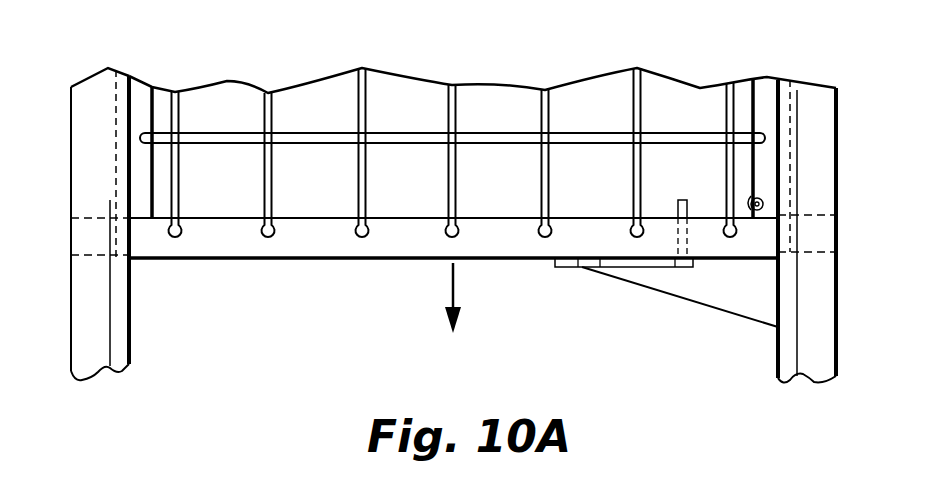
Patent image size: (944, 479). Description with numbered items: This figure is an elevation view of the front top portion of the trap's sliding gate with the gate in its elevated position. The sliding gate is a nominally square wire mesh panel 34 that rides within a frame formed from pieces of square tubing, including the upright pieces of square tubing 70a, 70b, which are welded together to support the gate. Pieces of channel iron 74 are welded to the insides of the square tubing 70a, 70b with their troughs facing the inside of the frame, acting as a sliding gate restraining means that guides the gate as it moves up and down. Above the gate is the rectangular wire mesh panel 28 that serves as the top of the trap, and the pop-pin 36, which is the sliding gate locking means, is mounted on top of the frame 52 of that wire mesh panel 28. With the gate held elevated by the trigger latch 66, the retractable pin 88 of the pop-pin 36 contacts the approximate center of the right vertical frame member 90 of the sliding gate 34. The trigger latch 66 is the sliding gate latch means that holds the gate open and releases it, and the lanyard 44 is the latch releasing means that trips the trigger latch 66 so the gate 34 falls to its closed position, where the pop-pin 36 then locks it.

The square tubing piece 70a is at (87, 332).
The square tubing piece 70b is at (823, 342).
The channel iron 74 is at (122, 333).
The rectangular wire mesh panel 28 is at (838, 236).
The frame 52 is at (817, 257).
The right vertical frame member 90 is at (762, 86).
The pop-pin 36 is at (777, 175).
The retractable pin 88 is at (763, 203).
The wire mesh panel 34 is at (325, 265).
The trigger latch 66 is at (556, 267).
The lanyard 44 is at (700, 307).